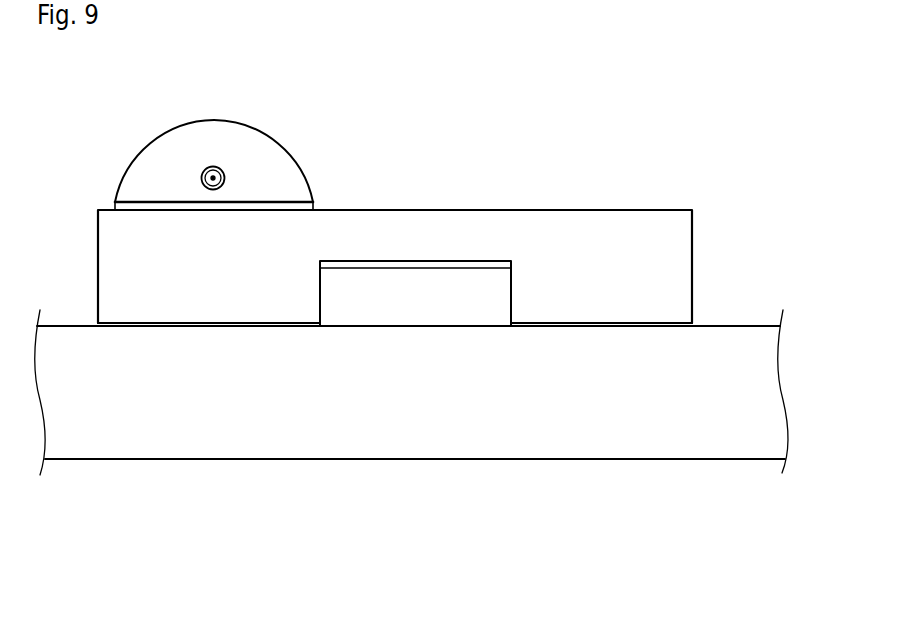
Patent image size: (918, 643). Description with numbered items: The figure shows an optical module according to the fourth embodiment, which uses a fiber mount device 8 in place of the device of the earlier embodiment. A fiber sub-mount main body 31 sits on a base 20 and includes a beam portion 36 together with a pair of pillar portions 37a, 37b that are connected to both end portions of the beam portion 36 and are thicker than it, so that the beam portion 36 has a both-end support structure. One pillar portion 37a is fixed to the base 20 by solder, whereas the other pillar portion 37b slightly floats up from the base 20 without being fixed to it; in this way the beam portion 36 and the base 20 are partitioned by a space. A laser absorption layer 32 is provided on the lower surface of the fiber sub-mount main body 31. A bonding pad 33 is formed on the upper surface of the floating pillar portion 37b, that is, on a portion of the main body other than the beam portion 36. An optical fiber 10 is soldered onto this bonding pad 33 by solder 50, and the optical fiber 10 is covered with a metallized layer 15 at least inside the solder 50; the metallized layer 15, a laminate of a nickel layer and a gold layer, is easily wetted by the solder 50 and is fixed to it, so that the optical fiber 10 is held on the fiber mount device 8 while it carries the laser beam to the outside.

The fiber mount device 8 is at (733, 90).
The base 20 is at (287, 443).
The fiber sub-mount main body 31 is at (667, 210).
The pillar portion 37b is at (107, 268).
The pillar portion 37a is at (682, 293).
The beam portion 36 is at (435, 225).
The laser absorption layer 32 is at (378, 266).
The bonding pad 33 is at (147, 208).
The solder 50 is at (235, 137).
The optical fiber 10 is at (208, 167).
The metallized layer 15 is at (206, 169).